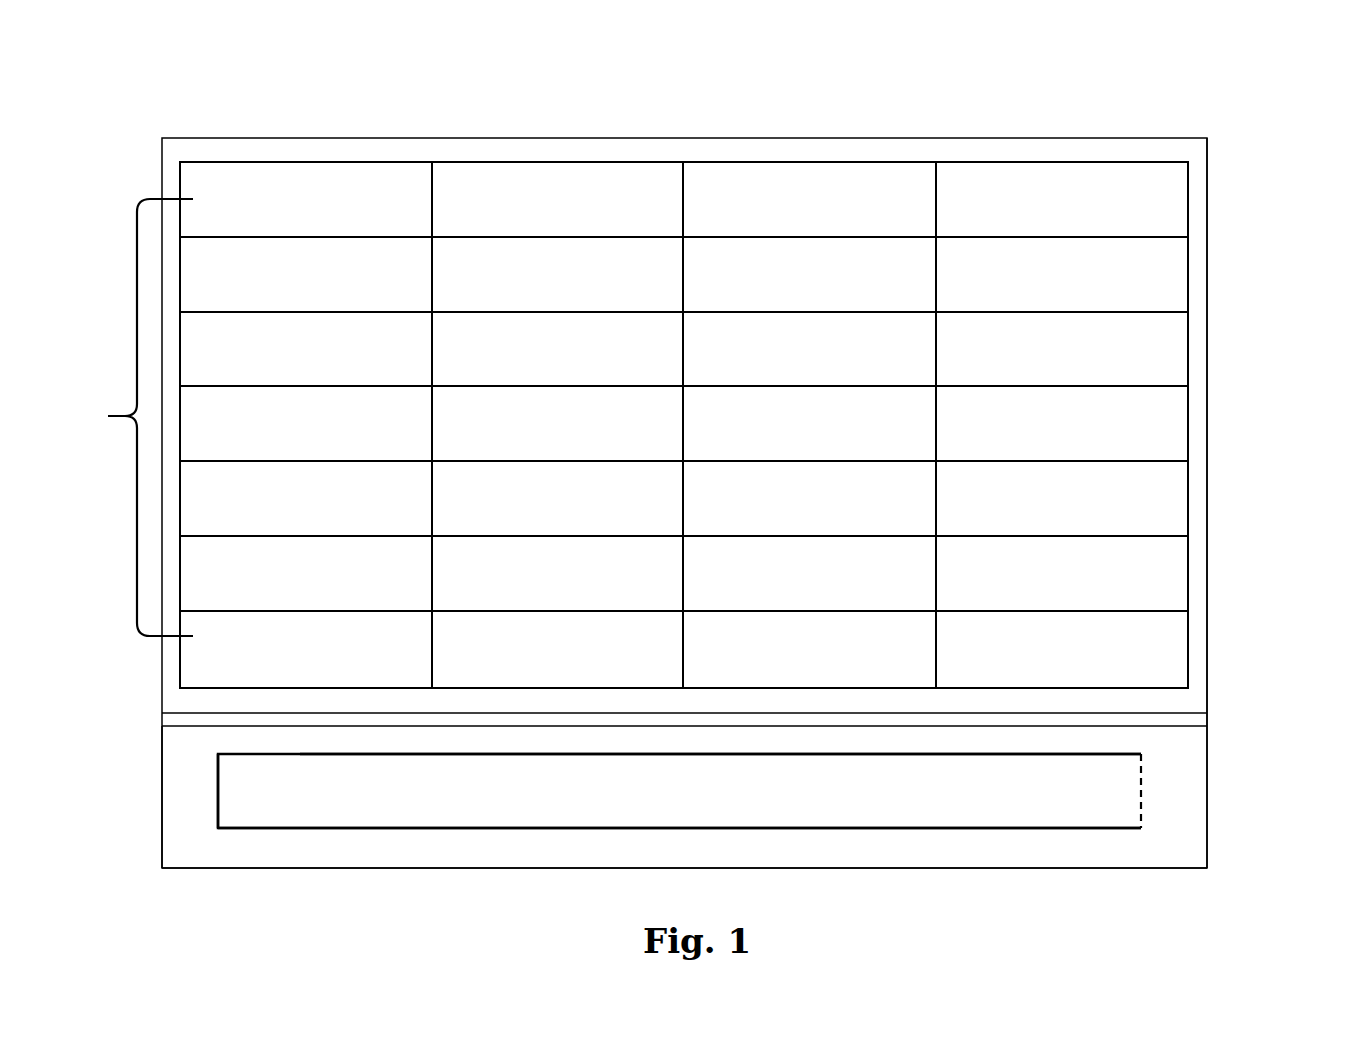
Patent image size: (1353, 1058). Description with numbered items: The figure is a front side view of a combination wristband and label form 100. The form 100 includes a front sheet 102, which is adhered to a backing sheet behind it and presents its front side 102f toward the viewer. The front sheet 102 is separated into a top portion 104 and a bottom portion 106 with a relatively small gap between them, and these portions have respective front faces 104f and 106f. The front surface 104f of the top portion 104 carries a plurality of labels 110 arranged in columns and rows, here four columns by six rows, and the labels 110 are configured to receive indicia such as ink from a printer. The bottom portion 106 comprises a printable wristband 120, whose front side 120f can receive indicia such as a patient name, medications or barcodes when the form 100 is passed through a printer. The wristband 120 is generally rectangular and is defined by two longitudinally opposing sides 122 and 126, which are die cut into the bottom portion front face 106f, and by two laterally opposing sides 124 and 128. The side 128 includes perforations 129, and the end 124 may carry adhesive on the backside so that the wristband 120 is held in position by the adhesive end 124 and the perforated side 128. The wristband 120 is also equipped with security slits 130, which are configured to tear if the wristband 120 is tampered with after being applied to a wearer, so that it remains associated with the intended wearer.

The combination wristband and label form 100 is at (1240, 157).
The front sheet 102 is at (426, 116).
The front side of front sheet 102f is at (1271, 314).
The top portion 104 is at (1208, 465).
The front surface of top portion 104f is at (1157, 572).
The bottom portion 106 is at (162, 813).
The front face of bottom portion 106f is at (177, 760).
The labels 110 is at (108, 416).
The wristband 120 is at (512, 791).
The front side of wristband 120f is at (404, 791).
The longitudinally opposing side 122 is at (1013, 752).
The laterally opposing side 124 is at (218, 790).
The longitudinally opposing side 126 is at (810, 828).
The laterally opposing side 128 is at (1128, 767).
The perforations 129 is at (1143, 798).
The security slits 130 is at (252, 798).